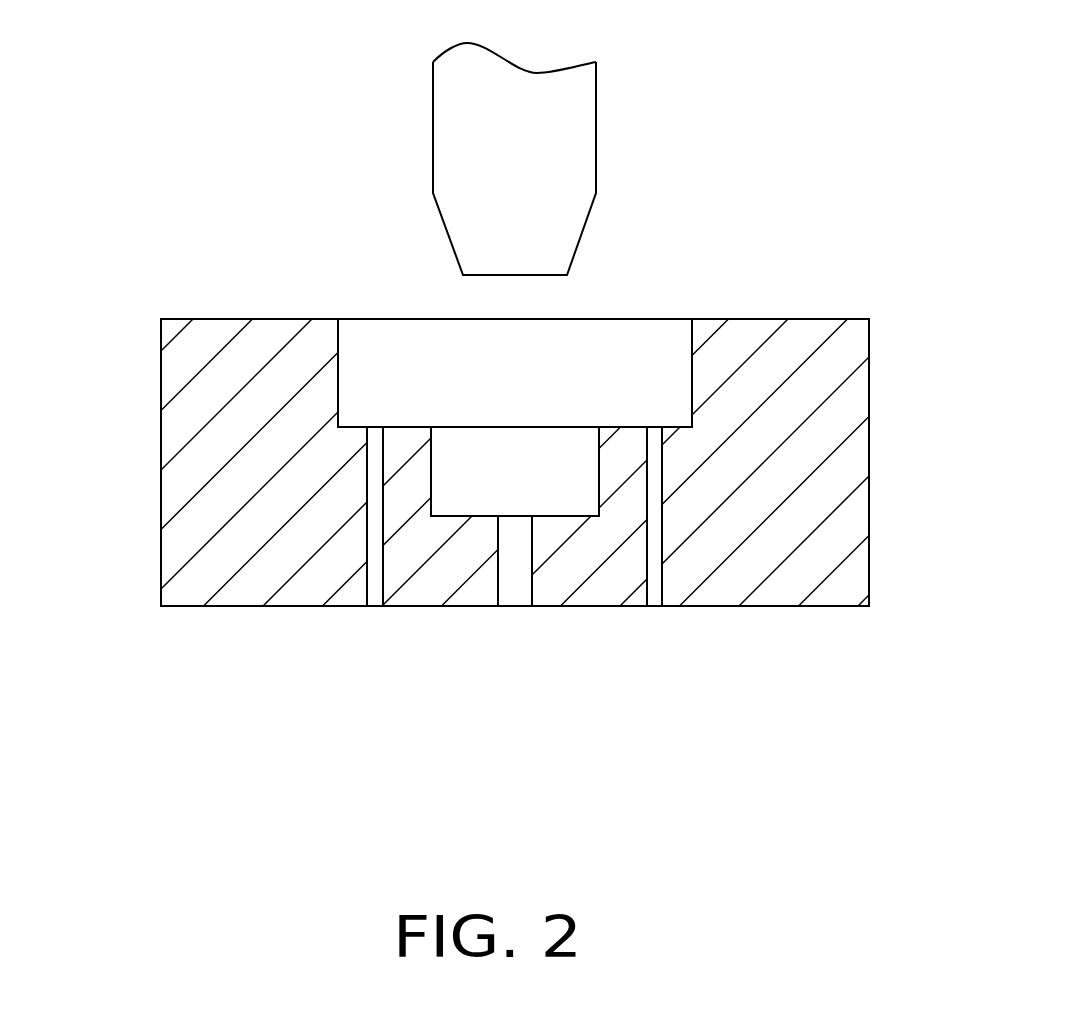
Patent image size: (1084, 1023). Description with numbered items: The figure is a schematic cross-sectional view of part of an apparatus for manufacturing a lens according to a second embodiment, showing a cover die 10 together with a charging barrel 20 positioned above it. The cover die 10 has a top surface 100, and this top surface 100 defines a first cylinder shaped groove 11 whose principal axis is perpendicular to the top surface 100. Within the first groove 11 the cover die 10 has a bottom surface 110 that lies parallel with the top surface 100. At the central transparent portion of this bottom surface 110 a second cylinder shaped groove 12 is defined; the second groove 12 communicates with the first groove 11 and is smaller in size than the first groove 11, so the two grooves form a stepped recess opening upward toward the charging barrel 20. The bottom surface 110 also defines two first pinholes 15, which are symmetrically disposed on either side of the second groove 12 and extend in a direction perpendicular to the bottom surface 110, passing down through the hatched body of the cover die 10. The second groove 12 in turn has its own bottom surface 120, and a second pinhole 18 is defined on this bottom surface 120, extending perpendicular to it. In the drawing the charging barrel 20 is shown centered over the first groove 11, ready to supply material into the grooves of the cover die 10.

The charging barrel 20 is at (572, 145).
The top surface 100 is at (542, 447).
The cover die 10 is at (842, 528).
The first cylinder shaped groove 11 is at (613, 382).
The bottom surface 110 is at (408, 423).
The second cylinder shaped groove 12 is at (559, 482).
The bottom surface 120 is at (473, 513).
The first pinholes 15 is at (372, 572).
The second pinhole 18 is at (513, 582).